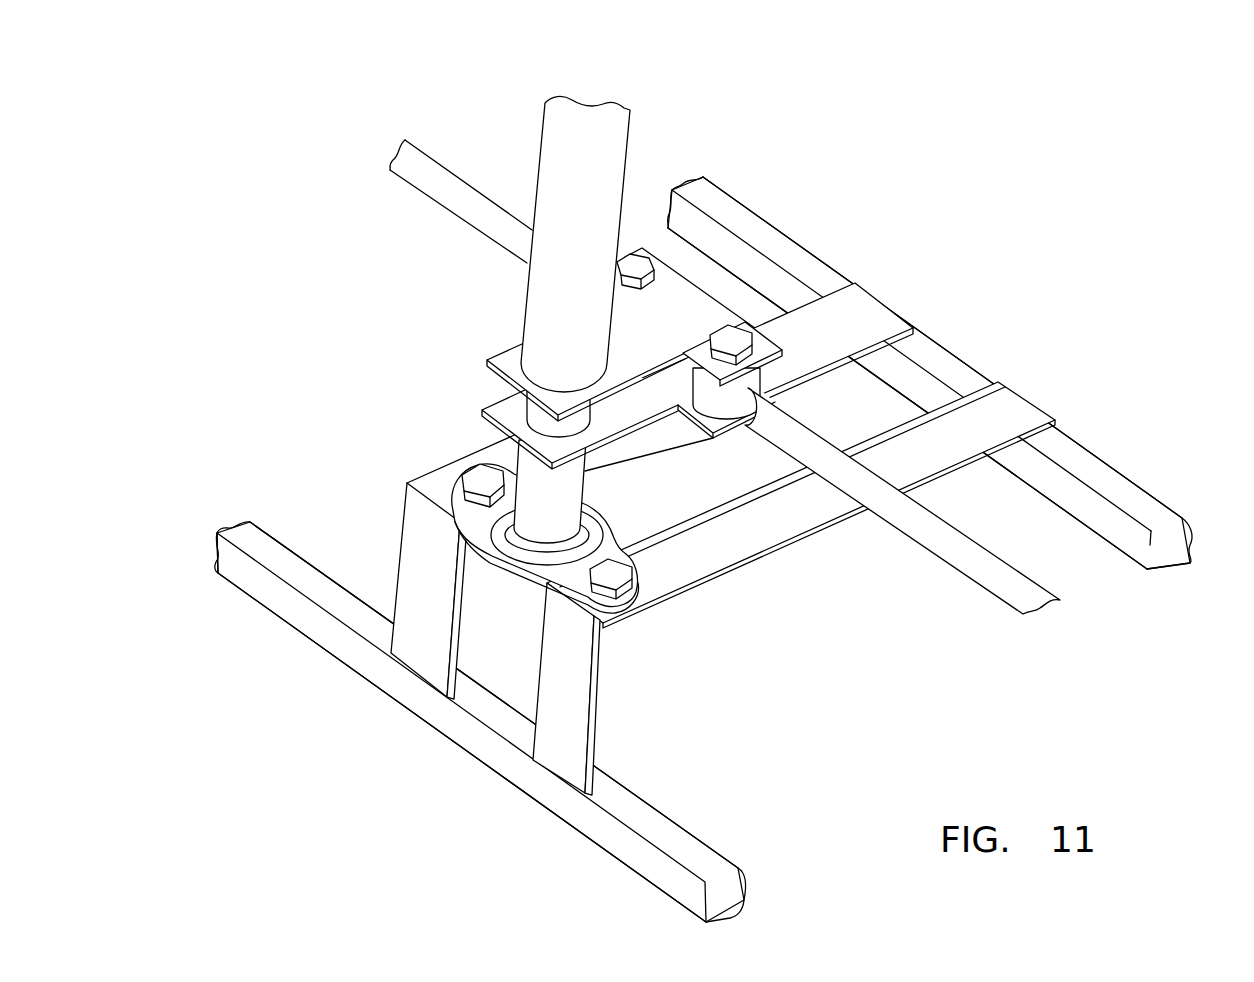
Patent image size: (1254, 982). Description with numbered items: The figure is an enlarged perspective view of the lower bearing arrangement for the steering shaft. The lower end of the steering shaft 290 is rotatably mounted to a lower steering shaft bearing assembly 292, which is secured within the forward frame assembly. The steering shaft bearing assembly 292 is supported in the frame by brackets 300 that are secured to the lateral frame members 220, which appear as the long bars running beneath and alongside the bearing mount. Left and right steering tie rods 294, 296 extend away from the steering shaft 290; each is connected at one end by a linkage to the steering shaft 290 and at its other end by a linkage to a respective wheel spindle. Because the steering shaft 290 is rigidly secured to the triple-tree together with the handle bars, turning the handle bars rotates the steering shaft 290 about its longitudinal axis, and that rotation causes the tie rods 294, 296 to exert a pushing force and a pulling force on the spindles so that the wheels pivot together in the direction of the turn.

The lateral frame members 220 is at (1100, 473).
The steering shaft 290 is at (560, 155).
The lower steering shaft bearing assembly 292 is at (447, 520).
The left steering tie rod 294 is at (973, 565).
The right steering tie rod 296 is at (452, 202).
The brackets 300 is at (405, 552).